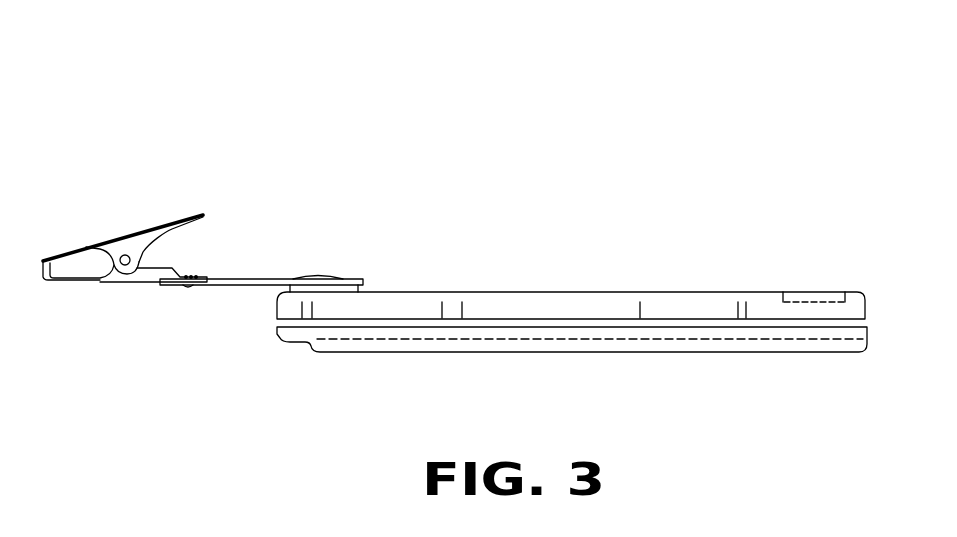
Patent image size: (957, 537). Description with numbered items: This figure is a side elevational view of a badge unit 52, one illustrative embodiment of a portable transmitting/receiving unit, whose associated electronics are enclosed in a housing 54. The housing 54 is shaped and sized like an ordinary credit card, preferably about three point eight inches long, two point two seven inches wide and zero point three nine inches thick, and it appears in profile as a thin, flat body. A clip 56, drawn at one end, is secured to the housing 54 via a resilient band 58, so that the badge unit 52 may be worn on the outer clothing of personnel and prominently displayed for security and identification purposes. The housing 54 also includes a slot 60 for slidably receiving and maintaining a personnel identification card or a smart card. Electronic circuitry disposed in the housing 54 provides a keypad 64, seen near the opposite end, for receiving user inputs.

The badge unit 52 is at (173, 100).
The housing 54 is at (713, 298).
The clip 56 is at (122, 236).
The resilient band 58 is at (237, 287).
The slot 60 is at (337, 355).
The keypad 64 is at (810, 290).